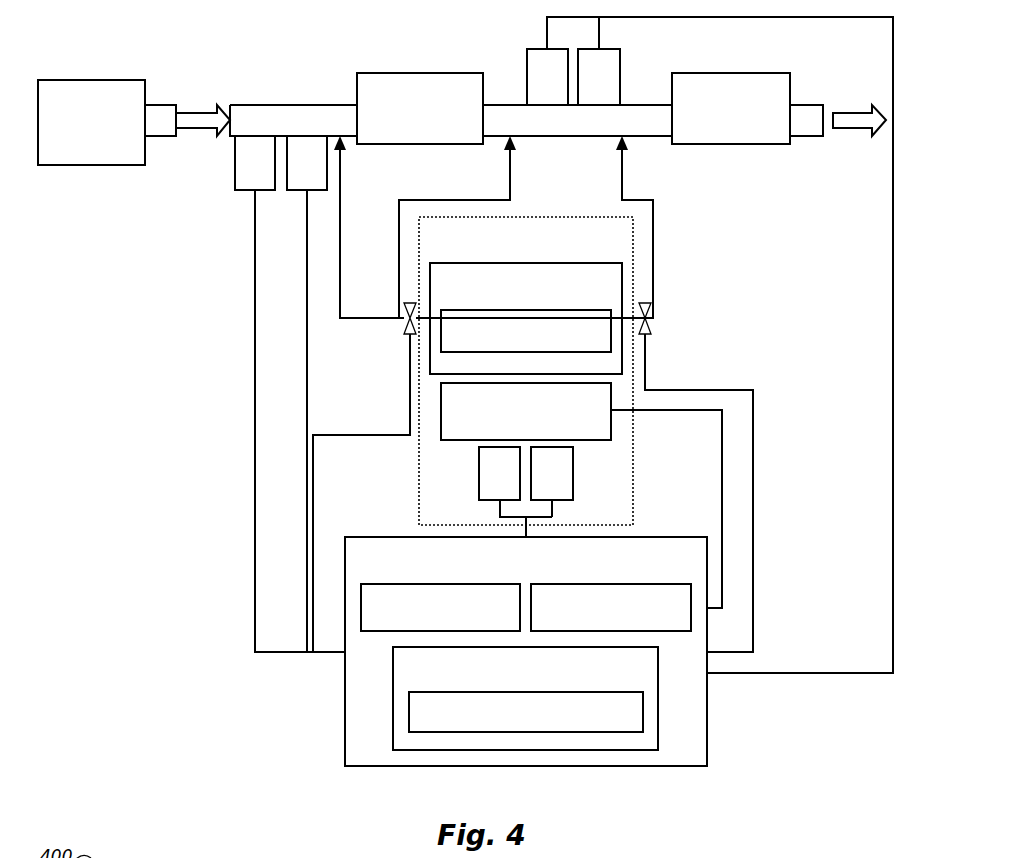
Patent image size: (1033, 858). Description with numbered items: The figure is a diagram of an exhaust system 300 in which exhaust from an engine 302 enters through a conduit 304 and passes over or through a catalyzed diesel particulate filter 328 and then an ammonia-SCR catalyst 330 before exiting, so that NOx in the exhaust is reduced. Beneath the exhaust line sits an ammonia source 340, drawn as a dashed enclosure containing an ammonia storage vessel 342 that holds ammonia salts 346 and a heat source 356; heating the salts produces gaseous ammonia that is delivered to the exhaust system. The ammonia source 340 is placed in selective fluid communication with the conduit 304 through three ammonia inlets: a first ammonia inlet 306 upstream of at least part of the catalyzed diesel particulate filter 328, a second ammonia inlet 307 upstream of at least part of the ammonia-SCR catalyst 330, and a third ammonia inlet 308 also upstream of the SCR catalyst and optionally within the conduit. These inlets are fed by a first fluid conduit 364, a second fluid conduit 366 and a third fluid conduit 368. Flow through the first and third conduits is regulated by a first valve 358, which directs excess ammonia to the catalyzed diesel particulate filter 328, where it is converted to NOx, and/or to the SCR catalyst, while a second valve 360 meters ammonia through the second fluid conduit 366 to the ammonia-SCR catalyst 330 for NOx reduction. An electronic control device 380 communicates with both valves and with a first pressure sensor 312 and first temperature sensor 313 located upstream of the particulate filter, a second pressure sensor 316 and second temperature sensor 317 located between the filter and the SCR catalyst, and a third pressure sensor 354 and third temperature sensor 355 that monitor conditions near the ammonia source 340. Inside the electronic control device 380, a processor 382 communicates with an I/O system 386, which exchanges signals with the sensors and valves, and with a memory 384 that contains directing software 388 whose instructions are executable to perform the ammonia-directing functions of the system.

The exhaust system 300 is at (100, 60).
The engine 302 is at (76, 111).
The conduit 304 is at (207, 82).
The first ammonia inlet 306 is at (341, 141).
The second ammonia inlet 307 is at (618, 146).
The third ammonia inlet 308 is at (516, 146).
The first pressure sensor 312 is at (239, 163).
The first temperature sensor 313 is at (291, 163).
The second pressure sensor 316 is at (531, 76).
The second temperature sensor 317 is at (583, 76).
The catalyzed diesel particulate filter 328 is at (404, 106).
The ammonia-SCR catalyst 330 is at (717, 106).
The ammonia source 340 is at (511, 247).
The ammonia storage vessel 342 is at (511, 294).
The ammonia salts 346 is at (511, 340).
The third pressure sensor 354 is at (484, 472).
The third temperature sensor 355 is at (536, 472).
The heat source 356 is at (511, 415).
The first valve 358 is at (409, 340).
The second valve 360 is at (647, 338).
The first fluid conduit 364 is at (357, 320).
The second fluid conduit 366 is at (653, 320).
The third fluid conduit 368 is at (397, 272).
The electronic control device 380 is at (511, 566).
The processor 382 is at (424, 614).
The memory 384 is at (511, 677).
The I/O system 386 is at (595, 614).
The directing software 388 is at (511, 721).